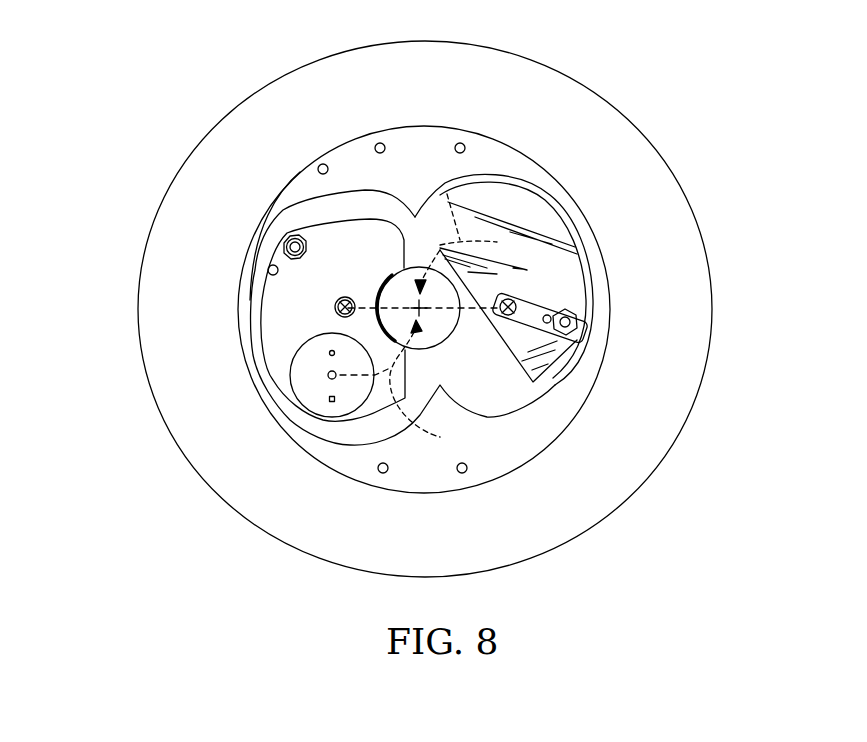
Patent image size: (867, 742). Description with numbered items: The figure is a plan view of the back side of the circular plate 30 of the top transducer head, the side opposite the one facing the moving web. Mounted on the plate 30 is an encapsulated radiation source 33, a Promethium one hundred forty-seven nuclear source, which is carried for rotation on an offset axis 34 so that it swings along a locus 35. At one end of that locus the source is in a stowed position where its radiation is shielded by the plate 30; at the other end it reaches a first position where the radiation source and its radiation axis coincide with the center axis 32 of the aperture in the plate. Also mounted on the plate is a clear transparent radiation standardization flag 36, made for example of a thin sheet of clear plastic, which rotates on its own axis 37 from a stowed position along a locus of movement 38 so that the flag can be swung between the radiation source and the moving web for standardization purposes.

The circular plate 30 is at (143, 369).
The center axis 32 is at (420, 310).
The encapsulated radiation source 33 is at (300, 347).
The axis 34 is at (340, 300).
The locus 35 is at (432, 434).
The radiation standardization flag 36 is at (568, 224).
The axis 37 is at (520, 292).
The locus of movement 38 is at (440, 190).